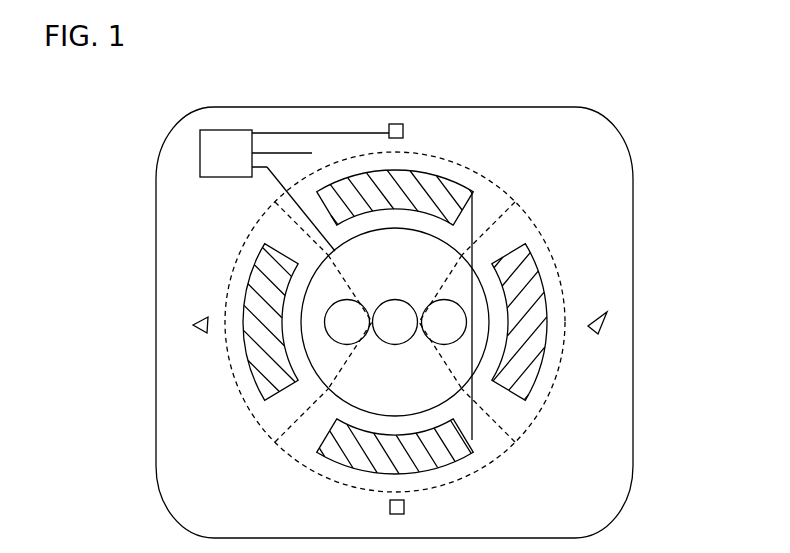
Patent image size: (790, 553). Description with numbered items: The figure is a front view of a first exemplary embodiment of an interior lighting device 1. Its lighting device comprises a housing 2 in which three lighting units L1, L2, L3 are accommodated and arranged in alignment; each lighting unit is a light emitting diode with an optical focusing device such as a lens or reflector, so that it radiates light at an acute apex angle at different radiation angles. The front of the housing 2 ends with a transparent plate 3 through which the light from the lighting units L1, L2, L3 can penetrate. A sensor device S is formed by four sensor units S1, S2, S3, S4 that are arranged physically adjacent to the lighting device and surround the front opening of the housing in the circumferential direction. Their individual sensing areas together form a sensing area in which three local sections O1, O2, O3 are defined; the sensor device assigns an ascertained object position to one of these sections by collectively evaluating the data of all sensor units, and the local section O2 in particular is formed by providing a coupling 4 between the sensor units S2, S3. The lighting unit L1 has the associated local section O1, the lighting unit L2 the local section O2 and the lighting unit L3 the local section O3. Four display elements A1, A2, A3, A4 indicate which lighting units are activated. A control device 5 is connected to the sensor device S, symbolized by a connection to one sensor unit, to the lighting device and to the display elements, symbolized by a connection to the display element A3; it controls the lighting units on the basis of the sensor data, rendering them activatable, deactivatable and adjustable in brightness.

The interior lighting device 1 is at (545, 87).
The housing 2 is at (401, 273).
The transparent plate 3 is at (411, 279).
The coupling 4 is at (474, 402).
The control device 5 is at (228, 130).
The sensor device S is at (485, 163).
The sensor unit S1 is at (258, 263).
The sensor unit S2 is at (472, 260).
The sensor unit S3 is at (363, 470).
The sensor unit S4 is at (543, 279).
The lighting unit L1 is at (345, 344).
The lighting unit L2 is at (395, 344).
The lighting unit L3 is at (443, 344).
The display element A1 is at (205, 317).
The display element A2 is at (405, 509).
The display element A3 is at (398, 123).
The display element A4 is at (601, 314).
The local section O1 is at (229, 355).
The local section O2 is at (428, 154).
The local section O3 is at (536, 416).